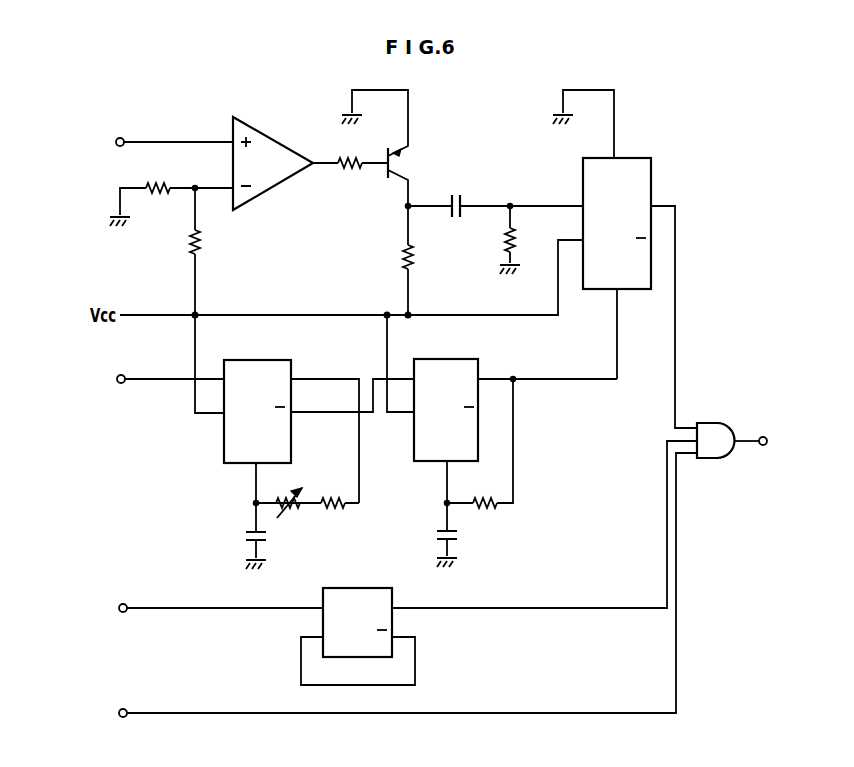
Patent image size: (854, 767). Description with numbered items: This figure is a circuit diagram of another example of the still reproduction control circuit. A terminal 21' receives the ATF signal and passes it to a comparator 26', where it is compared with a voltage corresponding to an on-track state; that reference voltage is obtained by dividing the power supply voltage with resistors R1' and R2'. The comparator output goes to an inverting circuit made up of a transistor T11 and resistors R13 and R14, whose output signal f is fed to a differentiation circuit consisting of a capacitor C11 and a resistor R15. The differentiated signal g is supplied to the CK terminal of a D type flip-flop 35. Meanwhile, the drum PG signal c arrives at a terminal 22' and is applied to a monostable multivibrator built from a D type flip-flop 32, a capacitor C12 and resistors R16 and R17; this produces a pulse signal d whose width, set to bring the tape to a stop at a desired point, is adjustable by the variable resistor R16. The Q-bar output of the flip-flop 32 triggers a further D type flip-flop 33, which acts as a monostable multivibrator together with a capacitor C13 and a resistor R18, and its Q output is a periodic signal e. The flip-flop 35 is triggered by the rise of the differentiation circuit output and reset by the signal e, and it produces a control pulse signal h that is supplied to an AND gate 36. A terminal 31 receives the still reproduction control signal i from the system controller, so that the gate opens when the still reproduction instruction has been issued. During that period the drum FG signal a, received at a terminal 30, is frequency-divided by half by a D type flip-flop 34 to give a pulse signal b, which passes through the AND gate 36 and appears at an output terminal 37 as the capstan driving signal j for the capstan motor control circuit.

The terminal 21' is at (171, 118).
The comparator 26' is at (273, 154).
The resistor R1' is at (171, 211).
The resistor R2' is at (223, 251).
The resistor R13 is at (350, 171).
The transistor T11 is at (395, 164).
The capacitor C11 is at (462, 195).
The resistor R14 is at (403, 253).
The resistor R15 is at (508, 241).
The D type flip-flop 35 is at (638, 158).
The D type flip-flop 32 is at (276, 360).
The D type flip-flop 33 is at (475, 359).
The D type flip-flop 34 is at (370, 588).
The terminal 22' is at (169, 406).
The resistor R17 is at (331, 501).
The variable resistor R16 is at (288, 510).
The capacitor C12 is at (246, 537).
The capacitor C13 is at (437, 535).
The resistor R18 is at (483, 510).
The terminal 30 is at (122, 604).
The terminal 31 is at (122, 709).
The AND gate 36 is at (712, 423).
The output terminal 37 is at (763, 436).
The drum FG signal a is at (255, 612).
The signal b is at (558, 612).
The PG signal c is at (168, 385).
The pulse signal d is at (341, 379).
The periodic signal e is at (585, 379).
The output signal of the inverting circuit f is at (430, 210).
The output signal of the differentiation circuit g is at (553, 204).
The control pulse signal h is at (675, 270).
The control signal i is at (198, 712).
The capstan driving signal j is at (745, 448).